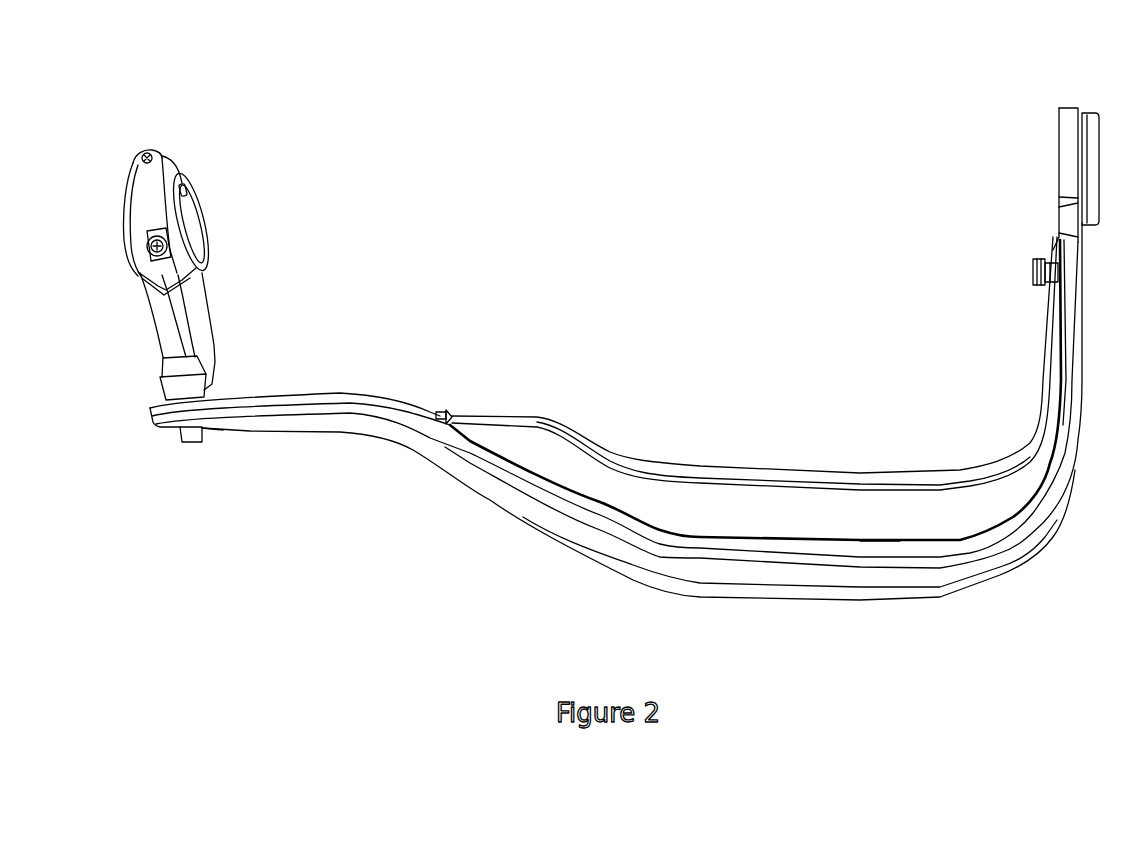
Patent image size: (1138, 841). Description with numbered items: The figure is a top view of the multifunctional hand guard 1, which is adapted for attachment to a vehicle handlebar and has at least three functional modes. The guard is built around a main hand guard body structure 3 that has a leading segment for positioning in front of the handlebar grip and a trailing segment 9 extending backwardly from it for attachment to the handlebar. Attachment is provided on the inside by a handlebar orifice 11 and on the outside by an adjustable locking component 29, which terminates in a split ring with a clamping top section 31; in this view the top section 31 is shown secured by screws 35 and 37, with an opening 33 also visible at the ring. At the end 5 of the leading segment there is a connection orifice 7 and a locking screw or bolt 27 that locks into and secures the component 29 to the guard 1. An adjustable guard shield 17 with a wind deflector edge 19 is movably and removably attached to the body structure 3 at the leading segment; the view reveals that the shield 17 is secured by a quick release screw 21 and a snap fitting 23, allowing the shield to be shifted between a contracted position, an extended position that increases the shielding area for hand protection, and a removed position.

The multifunctional hand guard 1 is at (638, 447).
The main hand guard body structure 3 is at (362, 397).
The end 5 is at (153, 422).
The connection orifice 7 is at (205, 429).
The trailing segment 9 is at (1067, 155).
The handlebar orifice 11 is at (1080, 168).
The adjustable guard shield 17 is at (760, 508).
The wind deflector edge 19 is at (870, 483).
The quick release screw 21 is at (1033, 272).
The snap fitting 23 is at (440, 410).
The locking screw or bolt 27 is at (193, 443).
The adjustable locking component 29 is at (214, 322).
The clamping top section 31 is at (186, 172).
The ring opening 33 is at (187, 192).
The screw 35 is at (150, 249).
The screw 37 is at (141, 150).